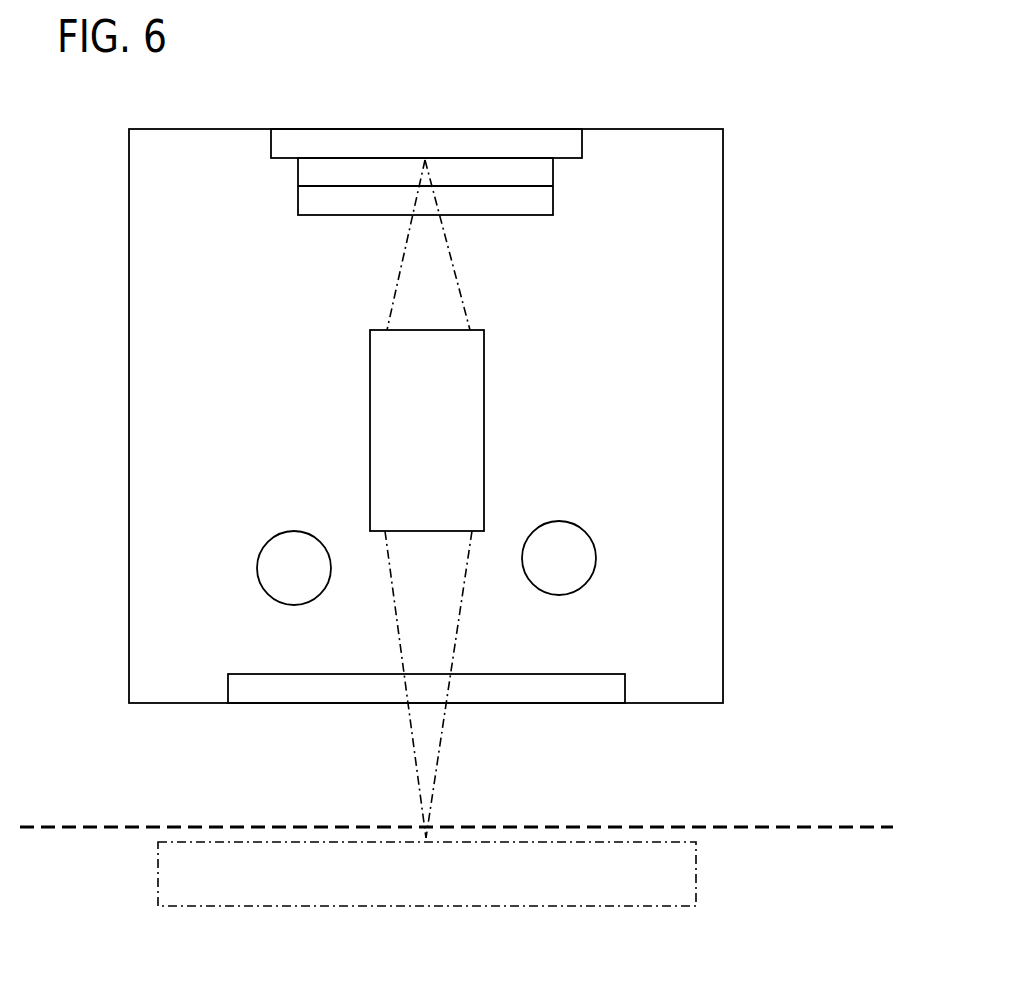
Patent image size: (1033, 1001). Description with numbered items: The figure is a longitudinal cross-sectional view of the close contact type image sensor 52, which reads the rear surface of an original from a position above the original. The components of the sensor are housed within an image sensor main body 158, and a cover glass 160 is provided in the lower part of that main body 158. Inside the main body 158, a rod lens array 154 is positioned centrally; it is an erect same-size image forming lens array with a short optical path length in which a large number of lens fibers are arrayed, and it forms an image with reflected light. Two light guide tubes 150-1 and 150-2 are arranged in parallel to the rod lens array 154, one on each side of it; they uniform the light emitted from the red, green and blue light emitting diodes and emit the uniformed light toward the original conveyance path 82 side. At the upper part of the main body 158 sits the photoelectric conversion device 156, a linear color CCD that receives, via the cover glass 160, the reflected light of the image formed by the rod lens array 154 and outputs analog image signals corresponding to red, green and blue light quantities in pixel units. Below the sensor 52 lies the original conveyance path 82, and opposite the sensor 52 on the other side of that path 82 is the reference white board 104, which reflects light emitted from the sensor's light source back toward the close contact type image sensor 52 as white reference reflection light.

The close contact type image sensor 52 is at (621, 100).
The original conveyance path 82 is at (795, 826).
The reference white board 104 is at (703, 878).
The light guide tube 150-1 is at (268, 541).
The light guide tube 150-2 is at (584, 530).
The rod lens array 154 is at (484, 378).
The photoelectric conversion device 156 is at (573, 160).
The image sensor main body 158 is at (724, 328).
The cover glass 160 is at (583, 690).